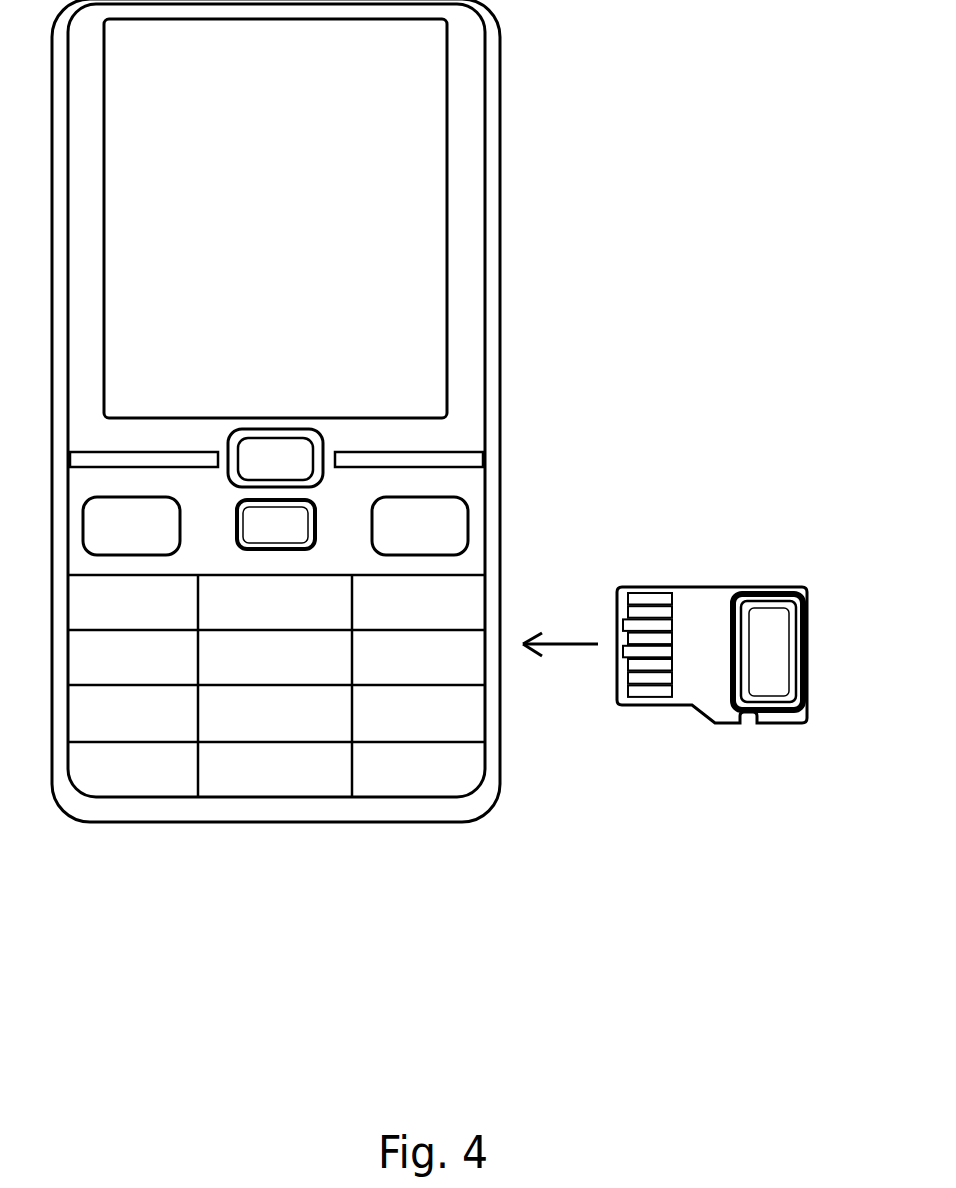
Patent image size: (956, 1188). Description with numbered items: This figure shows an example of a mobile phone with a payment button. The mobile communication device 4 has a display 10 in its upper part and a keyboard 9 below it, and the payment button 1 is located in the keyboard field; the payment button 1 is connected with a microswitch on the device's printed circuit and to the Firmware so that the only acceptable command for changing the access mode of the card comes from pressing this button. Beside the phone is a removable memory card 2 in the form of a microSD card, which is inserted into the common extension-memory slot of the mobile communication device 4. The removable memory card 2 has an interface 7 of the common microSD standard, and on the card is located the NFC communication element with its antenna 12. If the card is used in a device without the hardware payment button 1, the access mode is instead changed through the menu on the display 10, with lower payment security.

The mobile communication device 4 is at (485, 150).
The display 10 is at (295, 262).
The payment button 1 is at (317, 533).
The keyboard 9 is at (318, 762).
The removable memory card 2 is at (703, 692).
The interface 7 is at (640, 678).
The antenna of the removable memory card 12 is at (748, 603).